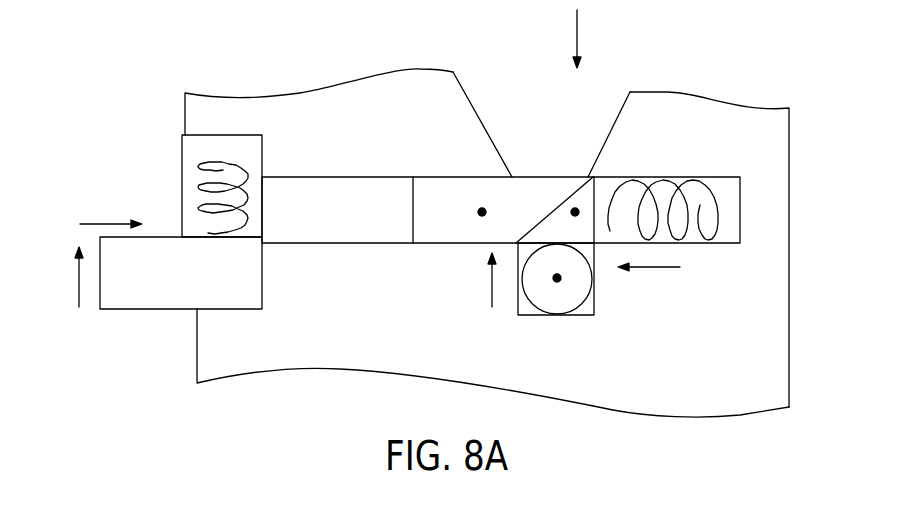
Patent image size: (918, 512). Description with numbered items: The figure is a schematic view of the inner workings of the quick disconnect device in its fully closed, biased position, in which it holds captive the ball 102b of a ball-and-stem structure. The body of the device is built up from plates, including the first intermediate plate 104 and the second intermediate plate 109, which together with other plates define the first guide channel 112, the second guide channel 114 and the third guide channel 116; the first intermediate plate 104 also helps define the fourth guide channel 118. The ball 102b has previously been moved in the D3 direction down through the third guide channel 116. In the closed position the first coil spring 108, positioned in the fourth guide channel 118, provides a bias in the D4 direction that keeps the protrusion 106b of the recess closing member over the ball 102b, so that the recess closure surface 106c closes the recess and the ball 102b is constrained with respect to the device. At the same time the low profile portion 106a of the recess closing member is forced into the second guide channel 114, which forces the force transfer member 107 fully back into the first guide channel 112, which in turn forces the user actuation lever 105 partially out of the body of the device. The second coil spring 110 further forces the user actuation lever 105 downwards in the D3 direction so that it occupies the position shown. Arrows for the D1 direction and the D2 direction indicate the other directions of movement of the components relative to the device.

The ball 102b is at (556, 282).
The first intermediate plate 104 is at (315, 287).
The user actuation lever 105 is at (146, 283).
The low profile portion 106a is at (482, 212).
The protrusion 106b is at (575, 212).
The recess closure surface 106c is at (522, 244).
The force transfer member 107 is at (315, 220).
The first coil spring 108 is at (707, 225).
The second intermediate plate 109 is at (315, 165).
The second coil spring 110 is at (205, 158).
The first guide channel 112 is at (347, 162).
The second guide channel 114 is at (433, 165).
The third guide channel 116 is at (473, 103).
The fourth guide channel 118 is at (703, 175).
The D1 direction D1 is at (78, 280).
The D2 direction D2 is at (105, 217).
The D3 direction D3 is at (578, 33).
The D4 direction D4 is at (655, 268).